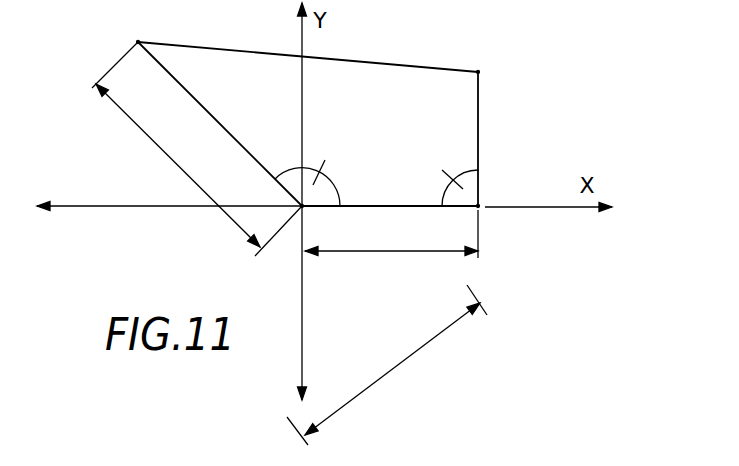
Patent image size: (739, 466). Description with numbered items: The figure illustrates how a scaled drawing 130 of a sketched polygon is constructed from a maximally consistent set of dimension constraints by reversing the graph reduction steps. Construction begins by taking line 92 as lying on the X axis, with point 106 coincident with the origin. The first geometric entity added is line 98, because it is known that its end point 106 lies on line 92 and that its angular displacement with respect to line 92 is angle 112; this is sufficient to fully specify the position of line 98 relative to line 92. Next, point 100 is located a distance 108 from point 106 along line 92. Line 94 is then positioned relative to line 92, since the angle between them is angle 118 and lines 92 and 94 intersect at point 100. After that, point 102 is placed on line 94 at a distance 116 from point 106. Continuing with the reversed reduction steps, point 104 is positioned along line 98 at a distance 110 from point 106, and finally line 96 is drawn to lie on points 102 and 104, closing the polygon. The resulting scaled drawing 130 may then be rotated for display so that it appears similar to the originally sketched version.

The line 92 is at (410, 207).
The line 94 is at (478, 140).
The line 96 is at (385, 65).
The line 98 is at (187, 87).
The point 100 is at (480, 209).
The point 102 is at (478, 72).
The point 104 is at (138, 42).
The point 106 is at (298, 212).
The distance 108 is at (367, 253).
The distance 110 is at (177, 165).
The angle 112 is at (338, 198).
The distance 116 is at (387, 371).
The angle 118 is at (466, 172).
The scaled drawing 130 is at (507, 133).